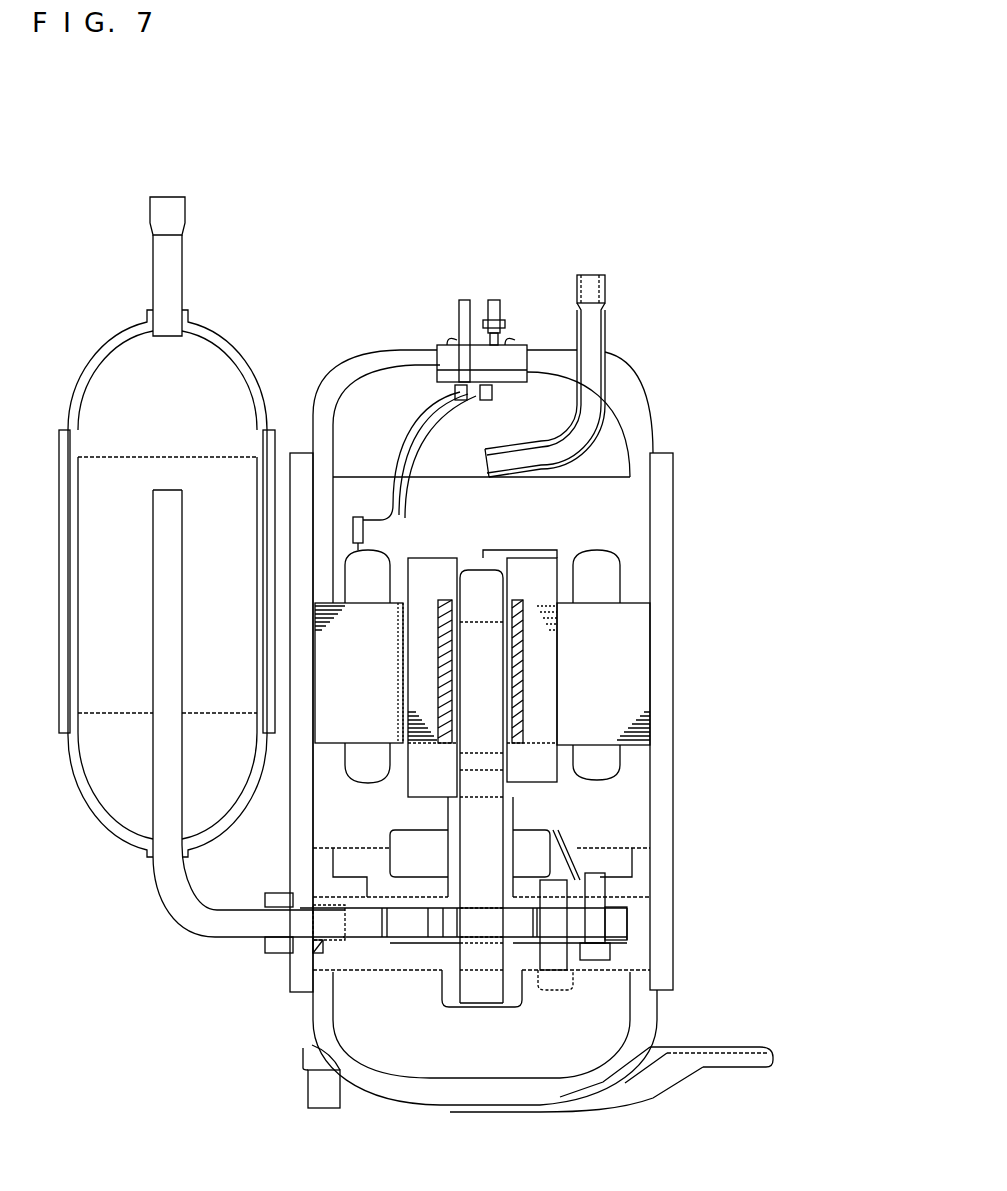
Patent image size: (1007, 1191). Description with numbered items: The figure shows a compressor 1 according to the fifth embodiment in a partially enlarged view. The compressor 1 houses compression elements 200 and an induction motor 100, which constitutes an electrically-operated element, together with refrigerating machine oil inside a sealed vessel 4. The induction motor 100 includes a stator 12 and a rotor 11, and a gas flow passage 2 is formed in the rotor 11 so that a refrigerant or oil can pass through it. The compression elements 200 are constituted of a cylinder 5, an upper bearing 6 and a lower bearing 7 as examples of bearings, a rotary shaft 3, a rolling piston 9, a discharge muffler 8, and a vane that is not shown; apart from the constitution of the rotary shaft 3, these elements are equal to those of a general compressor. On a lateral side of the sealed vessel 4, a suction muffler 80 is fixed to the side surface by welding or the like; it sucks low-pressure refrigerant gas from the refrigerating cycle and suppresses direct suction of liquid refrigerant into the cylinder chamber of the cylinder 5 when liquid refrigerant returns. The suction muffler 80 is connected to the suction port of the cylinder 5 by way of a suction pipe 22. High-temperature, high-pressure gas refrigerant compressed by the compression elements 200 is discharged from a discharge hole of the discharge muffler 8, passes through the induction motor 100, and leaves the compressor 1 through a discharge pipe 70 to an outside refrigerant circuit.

The compressor 1 is at (69, 266).
The gas flow passage 2 is at (548, 603).
The rotary shaft 3 is at (493, 788).
The sealed vessel 4 is at (637, 402).
The cylinder 5 is at (613, 927).
The upper bearing 6 is at (528, 887).
The lower bearing 7 is at (512, 992).
The discharge muffler 8 is at (528, 840).
The rolling piston 9 is at (533, 918).
The rotor 11 is at (547, 707).
The stator 12 is at (625, 651).
The suction pipe 22 is at (303, 933).
The discharge pipe 70 is at (605, 317).
The suction muffler 80 is at (110, 825).
The induction motor 100 is at (750, 627).
The compression elements 200 is at (750, 727).